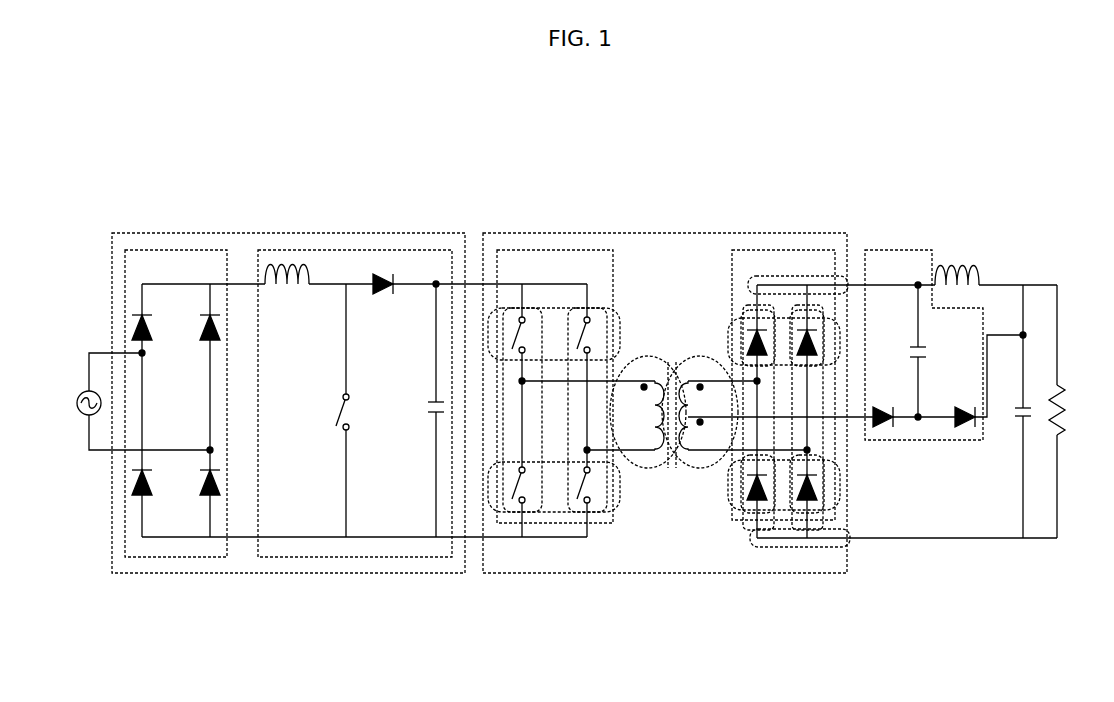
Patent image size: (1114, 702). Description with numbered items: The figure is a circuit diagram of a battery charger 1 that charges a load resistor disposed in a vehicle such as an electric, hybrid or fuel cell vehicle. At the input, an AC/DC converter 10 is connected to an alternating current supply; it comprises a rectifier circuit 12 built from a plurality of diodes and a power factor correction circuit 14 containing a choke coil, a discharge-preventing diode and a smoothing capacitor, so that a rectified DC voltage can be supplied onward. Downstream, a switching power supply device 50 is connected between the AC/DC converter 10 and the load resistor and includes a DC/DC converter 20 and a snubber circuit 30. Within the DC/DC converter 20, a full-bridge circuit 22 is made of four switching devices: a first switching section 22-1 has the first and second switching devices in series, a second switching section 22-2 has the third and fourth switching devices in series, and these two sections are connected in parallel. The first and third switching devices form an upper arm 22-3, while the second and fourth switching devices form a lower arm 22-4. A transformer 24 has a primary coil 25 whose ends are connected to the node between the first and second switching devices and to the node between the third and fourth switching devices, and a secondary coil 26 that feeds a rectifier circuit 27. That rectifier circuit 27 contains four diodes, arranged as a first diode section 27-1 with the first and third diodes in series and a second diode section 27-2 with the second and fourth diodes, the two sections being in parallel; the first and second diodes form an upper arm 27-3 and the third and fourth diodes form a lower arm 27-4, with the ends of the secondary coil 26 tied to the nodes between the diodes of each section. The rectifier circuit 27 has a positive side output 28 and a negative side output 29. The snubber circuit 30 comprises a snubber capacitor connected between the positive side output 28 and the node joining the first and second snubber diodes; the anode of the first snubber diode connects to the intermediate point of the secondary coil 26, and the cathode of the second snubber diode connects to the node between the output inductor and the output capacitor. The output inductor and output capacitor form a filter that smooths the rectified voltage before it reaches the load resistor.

The battery charger 1 is at (863, 127).
The AC/DC converter 10 is at (272, 233).
The rectifier circuit 12 is at (185, 250).
The power factor correction circuit 14 is at (340, 250).
The DC/DC converter 20 is at (676, 233).
The full-bridge circuit 22 is at (553, 250).
The first switching section 22-1 is at (530, 512).
The second switching section 22-2 is at (593, 512).
The upper arm 22-3 is at (620, 310).
The lower arm 22-4 is at (615, 512).
The transformer 24 is at (672, 362).
The primary coil 25 is at (656, 468).
The secondary coil 26 is at (696, 468).
The rectifier circuit 27 is at (792, 250).
The first diode section 27-1 is at (765, 530).
The second diode section 27-2 is at (812, 530).
The upper arm 27-3 is at (732, 320).
The lower arm 27-4 is at (840, 478).
The positive side output 28 is at (850, 276).
The negative side output 29 is at (750, 540).
The snubber circuit 30 is at (895, 250).
The switching power supply device 50 is at (681, 158).